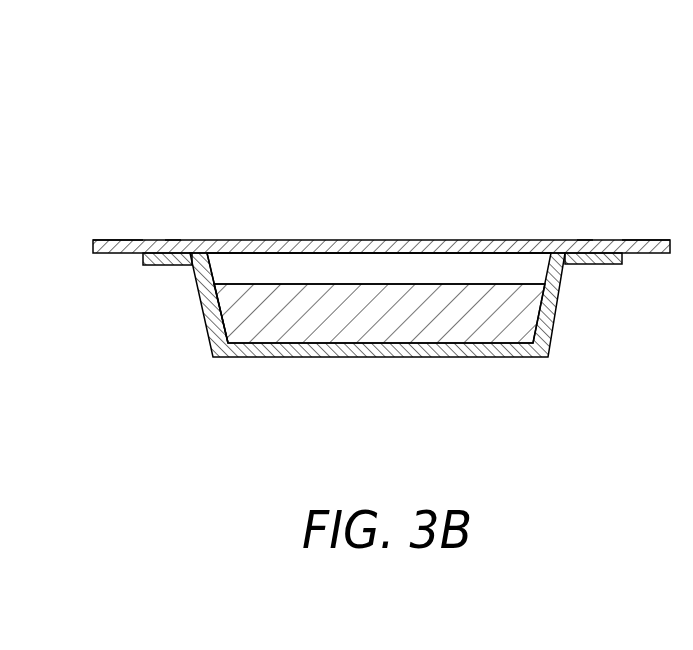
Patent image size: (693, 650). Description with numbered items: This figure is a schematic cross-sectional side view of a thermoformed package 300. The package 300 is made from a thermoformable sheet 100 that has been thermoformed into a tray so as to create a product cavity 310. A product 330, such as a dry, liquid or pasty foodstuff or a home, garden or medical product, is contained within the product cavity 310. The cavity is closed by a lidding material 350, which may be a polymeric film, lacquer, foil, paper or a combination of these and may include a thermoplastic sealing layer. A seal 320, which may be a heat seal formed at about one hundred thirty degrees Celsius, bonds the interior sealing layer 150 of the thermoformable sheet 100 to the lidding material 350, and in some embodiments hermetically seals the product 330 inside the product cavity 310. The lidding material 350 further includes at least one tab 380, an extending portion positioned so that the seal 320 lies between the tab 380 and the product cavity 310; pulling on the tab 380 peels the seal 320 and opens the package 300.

The thermoformed package 300 is at (529, 142).
The thermoformable sheet 100 is at (207, 323).
The interior sealing layer 150 is at (214, 275).
The product 330 is at (412, 323).
The product cavity 310 is at (314, 258).
The lidding material 350 is at (388, 246).
The seal 320 is at (172, 232).
The tab 380 is at (143, 233).